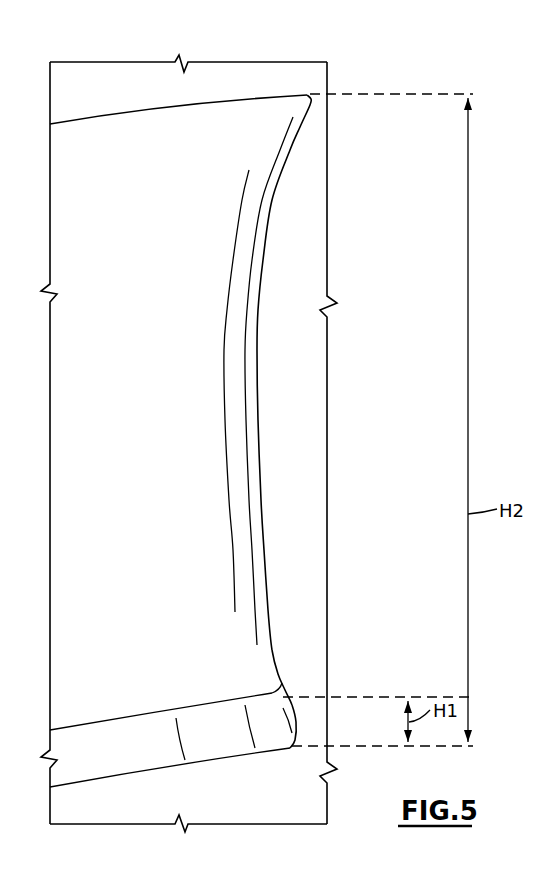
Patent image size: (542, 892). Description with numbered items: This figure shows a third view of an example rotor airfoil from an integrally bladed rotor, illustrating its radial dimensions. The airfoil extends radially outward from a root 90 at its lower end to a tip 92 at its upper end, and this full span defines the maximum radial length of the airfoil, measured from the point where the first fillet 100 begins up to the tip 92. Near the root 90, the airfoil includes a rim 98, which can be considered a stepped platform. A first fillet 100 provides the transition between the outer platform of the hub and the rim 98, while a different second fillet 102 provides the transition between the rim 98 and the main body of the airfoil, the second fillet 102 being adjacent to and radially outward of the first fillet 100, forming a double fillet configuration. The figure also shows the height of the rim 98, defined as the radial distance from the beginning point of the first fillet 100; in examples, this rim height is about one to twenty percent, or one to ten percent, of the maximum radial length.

The root 90 is at (239, 768).
The tip 92 is at (294, 84).
The rim 98 is at (191, 700).
The first fillet 100 is at (299, 706).
The second fillet 102 is at (285, 660).